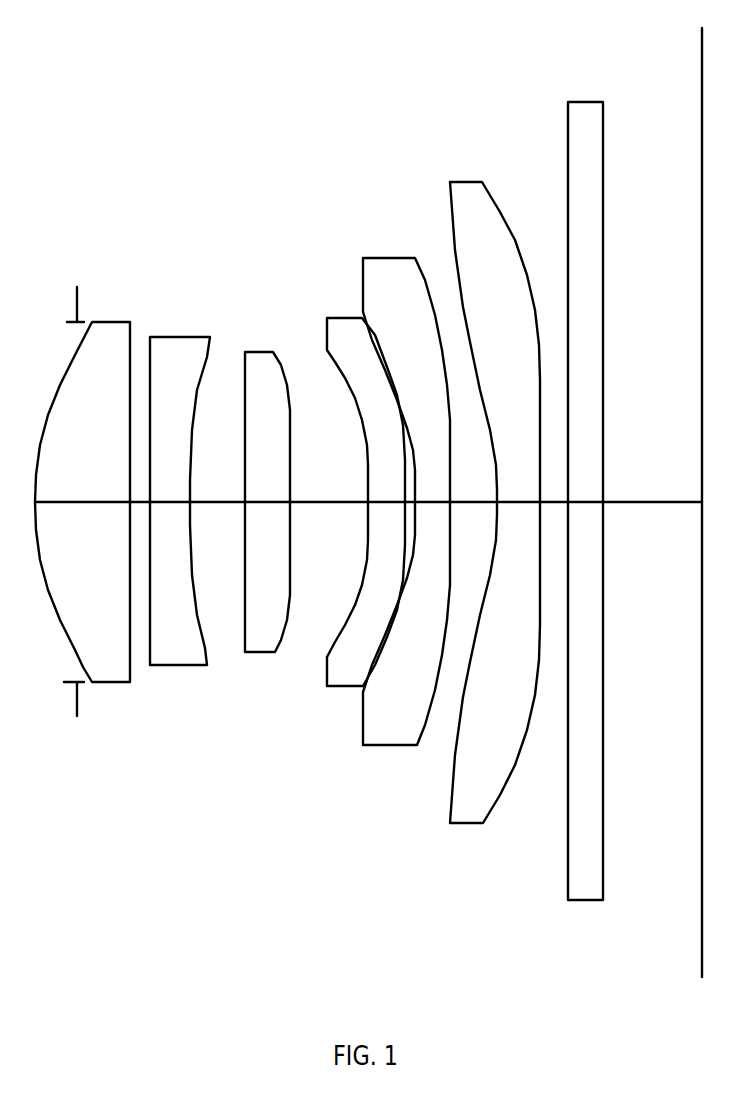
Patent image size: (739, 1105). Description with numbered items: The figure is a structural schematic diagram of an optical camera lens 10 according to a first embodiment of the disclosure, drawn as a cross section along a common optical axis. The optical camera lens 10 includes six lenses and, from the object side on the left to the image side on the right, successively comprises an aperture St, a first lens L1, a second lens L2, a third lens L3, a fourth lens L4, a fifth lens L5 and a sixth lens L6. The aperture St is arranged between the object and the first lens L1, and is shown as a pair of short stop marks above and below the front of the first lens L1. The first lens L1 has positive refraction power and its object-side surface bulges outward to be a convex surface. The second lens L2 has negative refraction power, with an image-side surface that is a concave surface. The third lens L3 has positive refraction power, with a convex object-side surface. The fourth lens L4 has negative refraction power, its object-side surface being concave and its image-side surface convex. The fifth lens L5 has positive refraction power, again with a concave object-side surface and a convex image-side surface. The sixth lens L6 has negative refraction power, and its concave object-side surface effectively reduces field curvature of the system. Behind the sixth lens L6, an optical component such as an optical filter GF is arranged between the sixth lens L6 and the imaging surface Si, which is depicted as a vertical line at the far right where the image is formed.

The optical camera lens 10 is at (368, 265).
The aperture St is at (59, 499).
The first lens L1 is at (87, 482).
The second lens L2 is at (180, 477).
The third lens L3 is at (266, 480).
The fourth lens L4 is at (361, 482).
The fifth lens L5 is at (406, 479).
The sixth lens L6 is at (495, 483).
The optical filter GF is at (585, 483).
The imaging surface Si is at (682, 493).